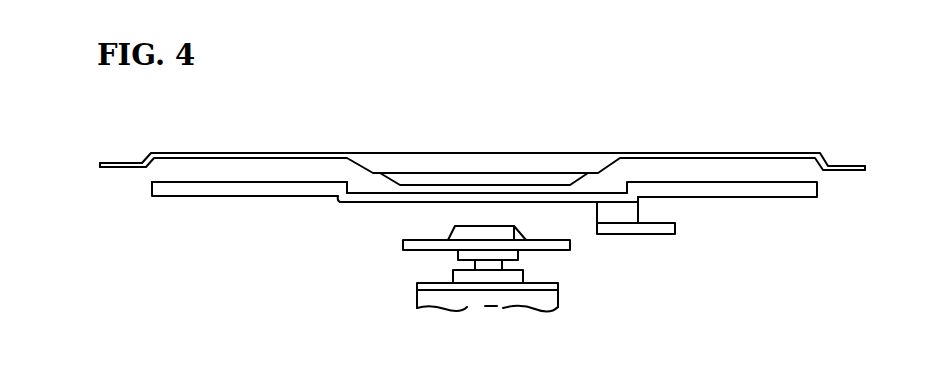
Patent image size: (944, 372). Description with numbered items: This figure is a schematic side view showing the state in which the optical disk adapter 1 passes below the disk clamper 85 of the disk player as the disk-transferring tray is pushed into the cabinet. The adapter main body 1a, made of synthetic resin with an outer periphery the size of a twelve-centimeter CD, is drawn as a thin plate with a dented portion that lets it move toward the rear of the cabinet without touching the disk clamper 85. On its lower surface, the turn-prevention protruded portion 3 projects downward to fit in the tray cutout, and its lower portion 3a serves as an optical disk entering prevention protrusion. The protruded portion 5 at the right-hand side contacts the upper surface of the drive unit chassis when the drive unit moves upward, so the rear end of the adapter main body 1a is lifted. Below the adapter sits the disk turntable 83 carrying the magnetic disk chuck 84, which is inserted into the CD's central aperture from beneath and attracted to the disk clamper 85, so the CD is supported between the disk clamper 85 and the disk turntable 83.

The optical disk adapter 1 is at (151, 216).
The adapter main body 1a is at (217, 187).
The turn-prevention protruded portion 3 is at (339, 197).
The lower portion of the turn-prevention protruded portion 3a is at (386, 203).
The protruded portion 5 is at (660, 231).
The disk turntable 83 is at (560, 250).
The magnetic disk chuck 84 is at (515, 224).
The disk clamper 85 is at (520, 183).